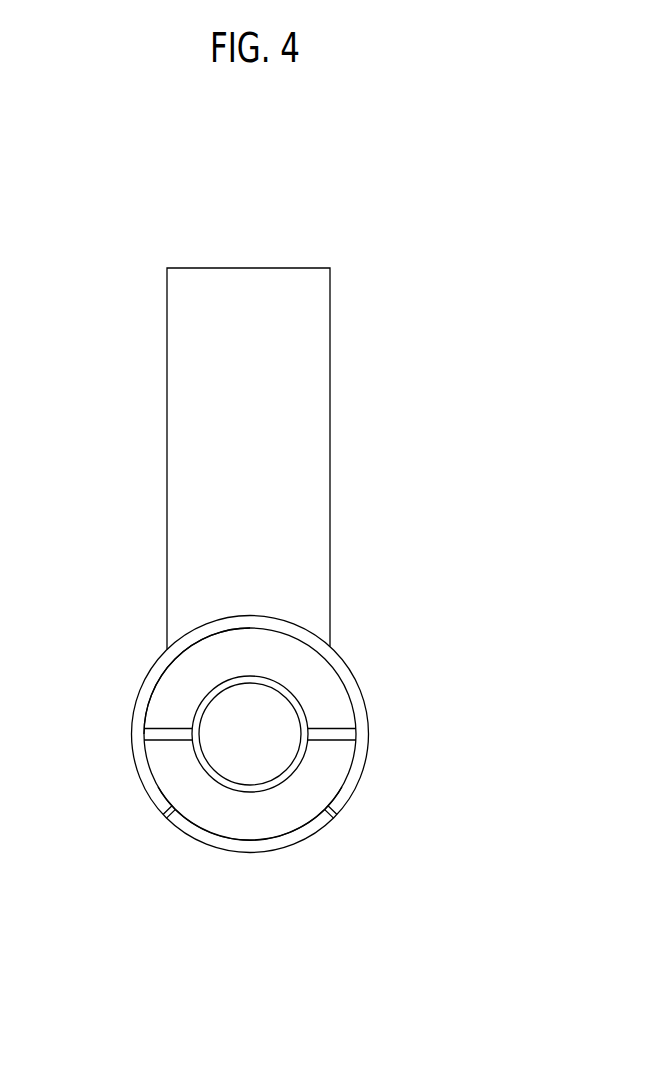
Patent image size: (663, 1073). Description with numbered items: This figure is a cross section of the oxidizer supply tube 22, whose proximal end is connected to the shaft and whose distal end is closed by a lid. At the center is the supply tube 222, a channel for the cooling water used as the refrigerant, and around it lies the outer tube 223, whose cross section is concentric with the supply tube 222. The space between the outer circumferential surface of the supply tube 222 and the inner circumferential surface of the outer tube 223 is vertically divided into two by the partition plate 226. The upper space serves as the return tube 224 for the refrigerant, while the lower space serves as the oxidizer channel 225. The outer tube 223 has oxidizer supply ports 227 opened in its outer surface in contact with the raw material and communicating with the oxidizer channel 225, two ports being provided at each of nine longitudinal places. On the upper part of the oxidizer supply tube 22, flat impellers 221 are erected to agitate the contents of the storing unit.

The oxidizer supply tube 22 is at (450, 473).
The impeller 221 is at (318, 448).
The supply tube 222 is at (288, 688).
The outer tube 223 is at (365, 770).
The return tube 224 is at (183, 690).
The oxidizer channel 225 is at (252, 822).
The partition plate 226 is at (333, 734).
The oxidizer supply port 227 is at (168, 818).